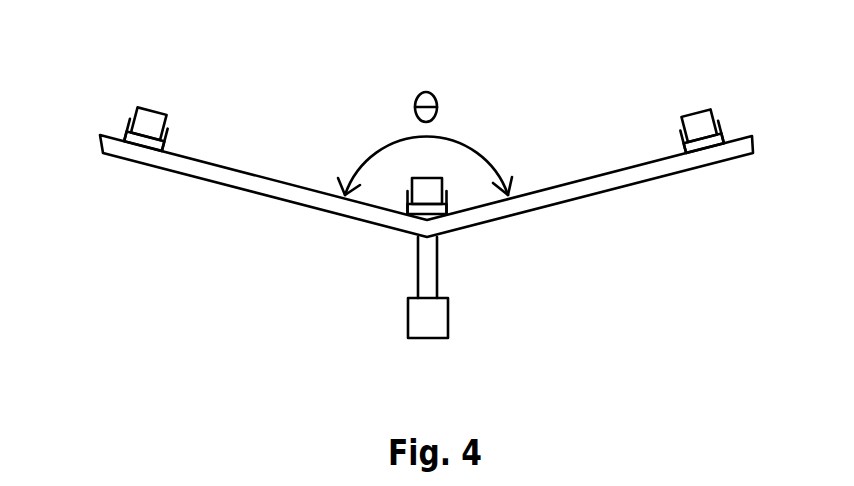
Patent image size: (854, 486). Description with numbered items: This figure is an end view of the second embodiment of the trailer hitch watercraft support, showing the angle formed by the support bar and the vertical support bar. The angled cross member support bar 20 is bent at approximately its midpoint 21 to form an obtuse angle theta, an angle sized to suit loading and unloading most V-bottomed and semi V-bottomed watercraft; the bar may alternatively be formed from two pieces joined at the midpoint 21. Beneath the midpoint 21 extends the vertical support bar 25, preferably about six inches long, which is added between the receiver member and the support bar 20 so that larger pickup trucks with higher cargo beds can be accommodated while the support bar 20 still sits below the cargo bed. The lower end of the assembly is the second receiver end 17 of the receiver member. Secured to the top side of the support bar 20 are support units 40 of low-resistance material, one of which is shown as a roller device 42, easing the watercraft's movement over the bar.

The second receiver end 17 is at (430, 322).
The angled cross member support bar 20 is at (218, 169).
The midpoint 21 is at (422, 228).
The vertical support bar 25 is at (440, 277).
The support unit 40 is at (115, 116).
The roller device 42 is at (695, 103).